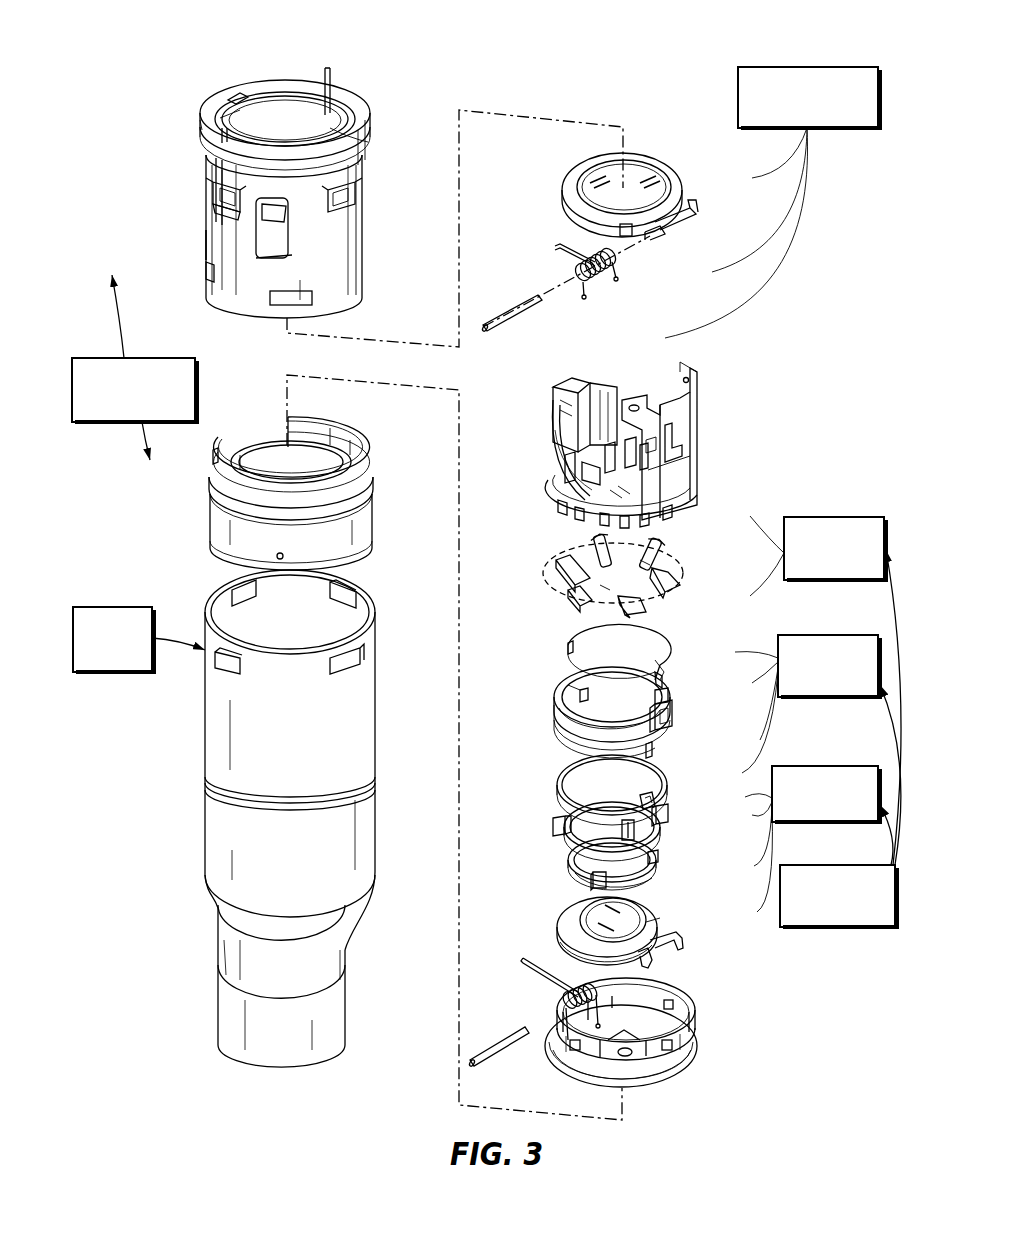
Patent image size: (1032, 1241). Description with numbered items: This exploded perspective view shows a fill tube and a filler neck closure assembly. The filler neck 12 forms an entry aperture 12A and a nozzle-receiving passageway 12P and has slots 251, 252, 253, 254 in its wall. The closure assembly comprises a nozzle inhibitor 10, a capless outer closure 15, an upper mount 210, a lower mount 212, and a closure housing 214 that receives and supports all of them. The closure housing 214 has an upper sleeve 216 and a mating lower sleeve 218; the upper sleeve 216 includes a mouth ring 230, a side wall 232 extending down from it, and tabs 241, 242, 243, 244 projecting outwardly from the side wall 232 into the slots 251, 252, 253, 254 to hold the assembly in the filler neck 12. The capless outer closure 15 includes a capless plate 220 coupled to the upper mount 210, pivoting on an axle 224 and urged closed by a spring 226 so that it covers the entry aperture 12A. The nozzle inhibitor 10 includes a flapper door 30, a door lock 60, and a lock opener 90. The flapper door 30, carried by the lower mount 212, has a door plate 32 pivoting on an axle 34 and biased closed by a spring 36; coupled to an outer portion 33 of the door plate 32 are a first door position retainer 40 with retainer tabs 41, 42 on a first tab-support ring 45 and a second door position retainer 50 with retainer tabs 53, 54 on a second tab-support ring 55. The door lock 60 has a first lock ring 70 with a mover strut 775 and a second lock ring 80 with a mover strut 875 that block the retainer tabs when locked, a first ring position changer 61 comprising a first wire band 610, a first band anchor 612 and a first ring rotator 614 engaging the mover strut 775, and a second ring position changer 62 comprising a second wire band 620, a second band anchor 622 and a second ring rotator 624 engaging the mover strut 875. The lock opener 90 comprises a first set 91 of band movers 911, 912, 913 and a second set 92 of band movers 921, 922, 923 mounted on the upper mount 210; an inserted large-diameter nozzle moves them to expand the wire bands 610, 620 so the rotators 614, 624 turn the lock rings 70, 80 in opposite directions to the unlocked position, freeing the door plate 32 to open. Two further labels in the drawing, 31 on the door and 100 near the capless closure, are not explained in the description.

The nozzle inhibitor 10 is at (813, 927).
The filler neck 12 is at (100, 607).
The entry aperture 12A is at (352, 567).
The nozzle-receiving passageway 12P is at (330, 635).
The capless outer closure 15 is at (795, 67).
The flapper door 30 is at (795, 766).
The door panel 31 is at (652, 940).
The door plate 32 is at (772, 796).
The outer portion 33 is at (650, 918).
The axle 34 is at (487, 1042).
The spring 36 is at (531, 976).
The first door position retainer 40 is at (654, 876).
The first retainer tab 41 is at (618, 869).
The second retainer tab 42 is at (636, 829).
The first tab-support ring 45 is at (650, 884).
The second door position retainer 50 is at (672, 823).
The third retainer tab 53 is at (562, 828).
The fourth retainer tab 54 is at (674, 809).
The second tab-support ring 55 is at (660, 860).
The door lock 60 is at (813, 635).
The first ring position changer 61 is at (658, 748).
The second ring position changer 62 is at (680, 658).
The first lock ring 70 is at (678, 782).
The second lock ring 80 is at (667, 694).
The lock opener 90 is at (836, 517).
The first set of band movers 91 is at (662, 600).
The second set of band movers 92 is at (695, 535).
The closure cap assembly 100 is at (657, 140).
The upper mount 210 is at (706, 431).
The lower mount 212 is at (550, 1063).
The closure housing 214 is at (160, 358).
The upper sleeve 216 is at (200, 243).
The lower sleeve 218 is at (208, 509).
The capless plate 220 is at (662, 183).
The axle 224 is at (522, 318).
The spring 226 is at (626, 265).
The mouth ring 230 is at (362, 100).
The side wall 232 is at (212, 255).
The tab 241 is at (228, 211).
The tab 242 is at (345, 210).
The tab 243 is at (373, 150).
The tab 244 is at (200, 183).
The slot 251 is at (215, 665).
The slot 252 is at (355, 672).
The slot 253 is at (330, 600).
The slot 254 is at (252, 592).
The first wire band 610 is at (603, 745).
The first band anchor 612 is at (596, 700).
The first ring rotator 614 is at (656, 752).
The second wire band 620 is at (680, 641).
The second band anchor 622 is at (578, 645).
The second ring rotator 624 is at (668, 682).
The mover strut 775 is at (644, 800).
The mover strut 875 is at (681, 716).
The band mover 911 is at (548, 567).
The band mover 912 is at (572, 608).
The band mover 913 is at (650, 611).
The band mover 921 is at (620, 547).
The band mover 922 is at (668, 551).
The band mover 923 is at (686, 574).